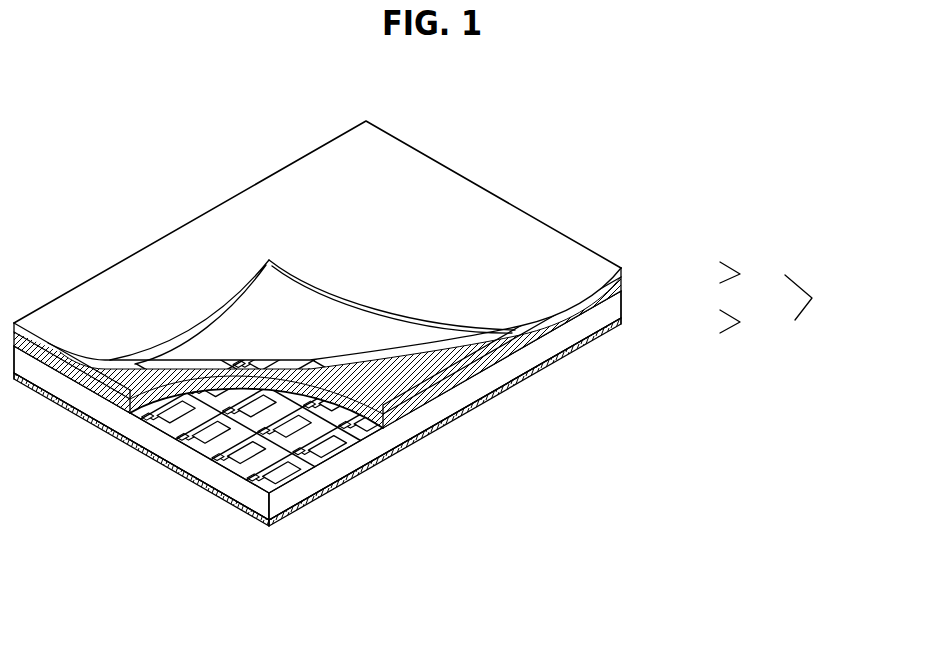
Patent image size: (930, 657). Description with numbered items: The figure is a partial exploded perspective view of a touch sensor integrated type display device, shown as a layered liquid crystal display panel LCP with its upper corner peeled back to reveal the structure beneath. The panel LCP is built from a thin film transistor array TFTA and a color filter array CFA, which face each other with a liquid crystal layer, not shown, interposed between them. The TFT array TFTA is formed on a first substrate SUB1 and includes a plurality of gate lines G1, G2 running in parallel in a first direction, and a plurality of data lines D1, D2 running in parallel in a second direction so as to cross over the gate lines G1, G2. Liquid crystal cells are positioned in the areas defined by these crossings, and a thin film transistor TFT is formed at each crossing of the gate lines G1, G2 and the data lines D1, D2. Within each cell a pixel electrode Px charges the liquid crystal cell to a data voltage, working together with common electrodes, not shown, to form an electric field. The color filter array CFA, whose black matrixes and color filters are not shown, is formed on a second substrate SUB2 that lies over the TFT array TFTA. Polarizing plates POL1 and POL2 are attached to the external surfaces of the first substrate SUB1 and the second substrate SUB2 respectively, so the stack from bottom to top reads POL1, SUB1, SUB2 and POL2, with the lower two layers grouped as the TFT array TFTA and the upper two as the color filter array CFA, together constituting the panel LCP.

The polarizing plate POL2 is at (622, 269).
The second substrate SUB2 is at (622, 287).
The first substrate SUB1 is at (622, 304).
The polarizing plate POL1 is at (624, 323).
The color filter array CFA is at (749, 274).
The thin film transistor array TFTA is at (756, 322).
The liquid crystal display panel LCP is at (816, 297).
The thin film transistor TFT is at (172, 440).
The data line D1 is at (257, 474).
The data line D2 is at (222, 454).
The gate line G1 is at (315, 467).
The gate line G2 is at (362, 443).
The pixel electrode Px is at (272, 485).